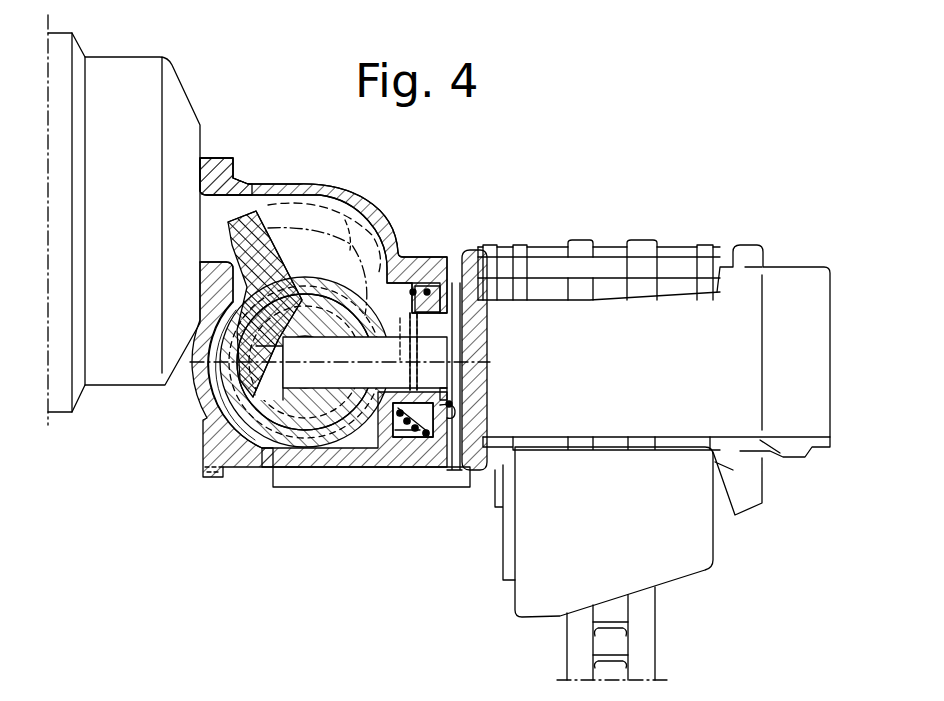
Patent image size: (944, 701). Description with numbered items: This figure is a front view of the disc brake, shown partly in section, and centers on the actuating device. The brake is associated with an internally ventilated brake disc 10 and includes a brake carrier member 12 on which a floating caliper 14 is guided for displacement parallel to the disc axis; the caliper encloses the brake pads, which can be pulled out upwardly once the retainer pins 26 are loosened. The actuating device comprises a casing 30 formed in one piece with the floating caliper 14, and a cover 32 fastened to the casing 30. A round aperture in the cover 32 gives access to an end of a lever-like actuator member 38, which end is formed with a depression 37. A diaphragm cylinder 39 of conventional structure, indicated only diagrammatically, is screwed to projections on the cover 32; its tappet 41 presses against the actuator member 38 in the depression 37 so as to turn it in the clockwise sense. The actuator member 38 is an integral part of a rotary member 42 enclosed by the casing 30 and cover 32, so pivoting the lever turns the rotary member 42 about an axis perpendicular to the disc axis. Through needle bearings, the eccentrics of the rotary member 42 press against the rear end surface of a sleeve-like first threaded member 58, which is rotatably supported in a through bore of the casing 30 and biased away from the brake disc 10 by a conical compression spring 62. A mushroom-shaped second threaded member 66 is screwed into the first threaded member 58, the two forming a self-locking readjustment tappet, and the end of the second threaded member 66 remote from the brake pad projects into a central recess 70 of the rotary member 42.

The brake disc 10 is at (645, 644).
The brake carrier member 12 is at (697, 543).
The floating caliper 14 is at (790, 292).
The retainer pins 26 is at (681, 262).
The casing 30 is at (357, 202).
The cover 32 is at (224, 176).
The depression 37 is at (260, 222).
The actuator member 38 is at (252, 284).
The diaphragm cylinder 39 is at (132, 80).
The tappet 41 is at (228, 232).
The rotary member 42 is at (256, 393).
The first threaded member 58 is at (390, 414).
The conical compression spring 62 is at (429, 418).
The second threaded member 66 is at (335, 368).
The central recess 70 is at (273, 335).